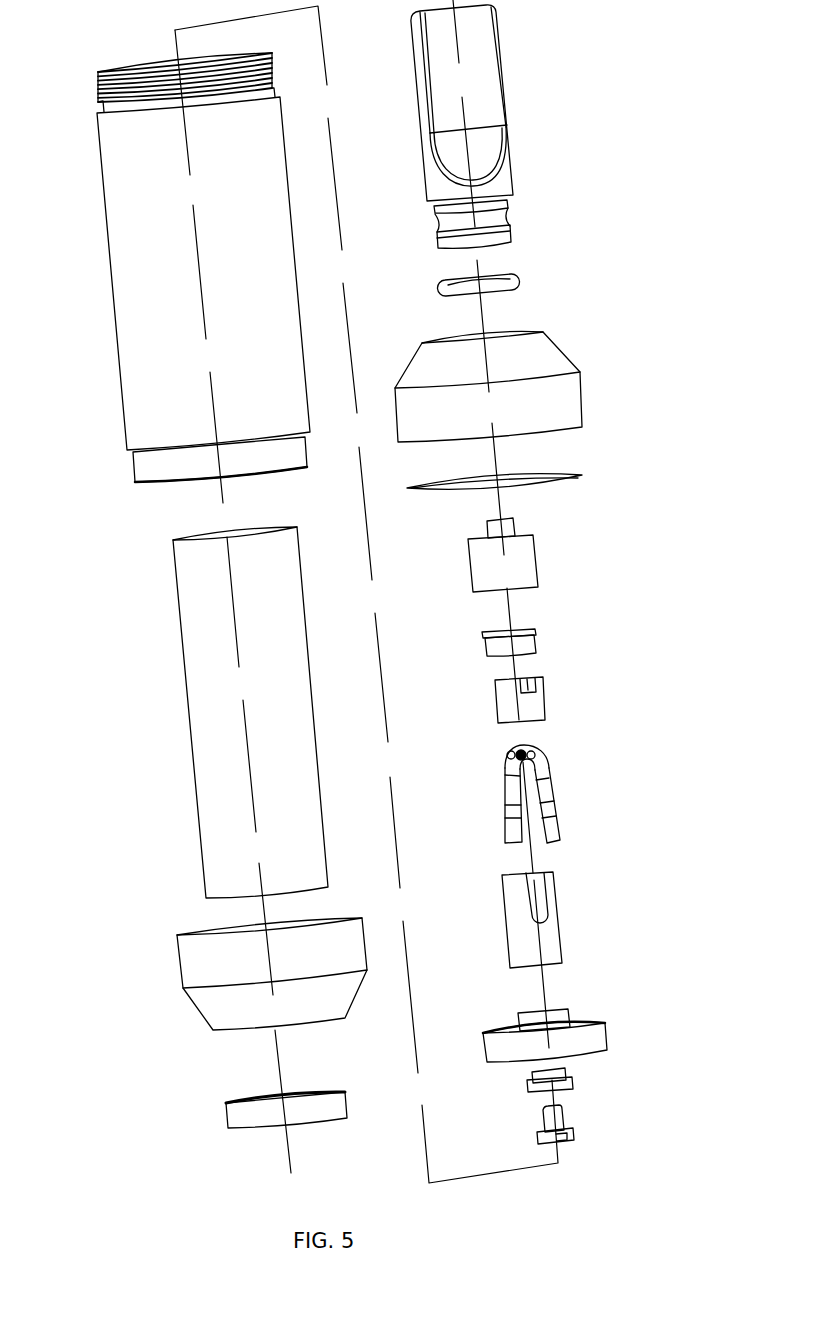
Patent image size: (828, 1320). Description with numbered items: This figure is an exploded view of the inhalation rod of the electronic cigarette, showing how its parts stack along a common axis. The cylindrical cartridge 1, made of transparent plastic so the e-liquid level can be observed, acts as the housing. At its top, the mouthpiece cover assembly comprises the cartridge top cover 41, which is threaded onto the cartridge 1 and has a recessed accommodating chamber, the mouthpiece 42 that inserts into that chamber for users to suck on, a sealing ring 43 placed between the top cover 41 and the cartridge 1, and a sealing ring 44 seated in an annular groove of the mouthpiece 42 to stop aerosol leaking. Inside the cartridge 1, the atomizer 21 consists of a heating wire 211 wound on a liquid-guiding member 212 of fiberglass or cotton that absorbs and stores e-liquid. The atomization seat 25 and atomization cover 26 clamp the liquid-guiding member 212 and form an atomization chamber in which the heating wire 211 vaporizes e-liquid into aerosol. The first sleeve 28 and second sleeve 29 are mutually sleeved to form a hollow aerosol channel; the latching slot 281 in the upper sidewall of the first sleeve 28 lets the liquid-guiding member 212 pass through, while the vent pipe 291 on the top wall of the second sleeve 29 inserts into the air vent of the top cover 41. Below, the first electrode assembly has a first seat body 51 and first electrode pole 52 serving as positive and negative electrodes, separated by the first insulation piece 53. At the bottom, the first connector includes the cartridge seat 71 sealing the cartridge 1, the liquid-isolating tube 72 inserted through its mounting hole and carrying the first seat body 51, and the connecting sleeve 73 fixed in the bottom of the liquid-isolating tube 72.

The cartridge 1 is at (170, 331).
The liquid-isolating tube 72 is at (238, 716).
The cartridge seat 71 is at (252, 988).
The connecting sleeve 73 is at (252, 1107).
The mouthpiece 42 is at (480, 92).
The sealing ring 44 is at (502, 283).
The cartridge top cover 41 is at (535, 407).
The sealing ring 43 is at (577, 472).
The vent pipe 291 is at (505, 525).
The second sleeve 29 is at (538, 560).
The atomization cover 26 is at (525, 643).
The atomization seat 25 is at (535, 712).
The atomizer 21 is at (623, 747).
The liquid-guiding member 212 is at (535, 753).
The heating wire 211 is at (522, 763).
The first sleeve 28 is at (553, 927).
The latching slot 281 is at (545, 900).
The first seat body 51 is at (590, 1037).
The first insulation piece 53 is at (572, 1080).
The first electrode pole 52 is at (573, 1132).